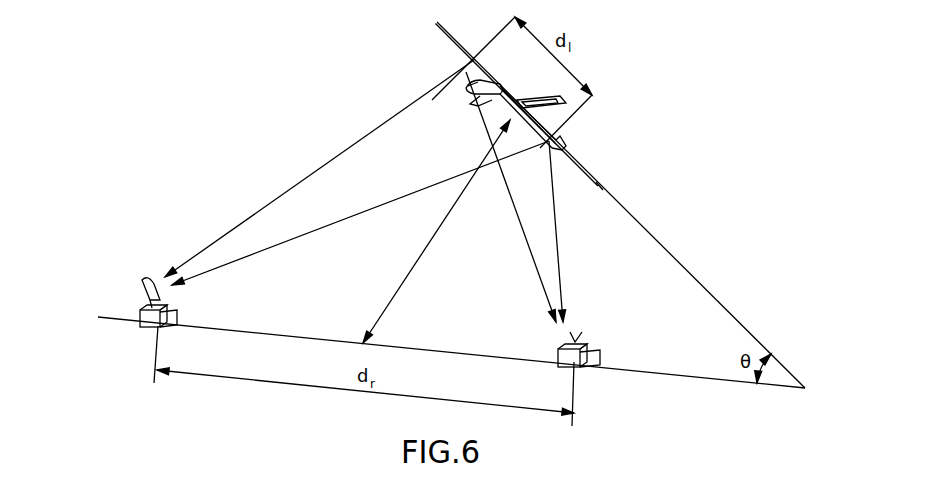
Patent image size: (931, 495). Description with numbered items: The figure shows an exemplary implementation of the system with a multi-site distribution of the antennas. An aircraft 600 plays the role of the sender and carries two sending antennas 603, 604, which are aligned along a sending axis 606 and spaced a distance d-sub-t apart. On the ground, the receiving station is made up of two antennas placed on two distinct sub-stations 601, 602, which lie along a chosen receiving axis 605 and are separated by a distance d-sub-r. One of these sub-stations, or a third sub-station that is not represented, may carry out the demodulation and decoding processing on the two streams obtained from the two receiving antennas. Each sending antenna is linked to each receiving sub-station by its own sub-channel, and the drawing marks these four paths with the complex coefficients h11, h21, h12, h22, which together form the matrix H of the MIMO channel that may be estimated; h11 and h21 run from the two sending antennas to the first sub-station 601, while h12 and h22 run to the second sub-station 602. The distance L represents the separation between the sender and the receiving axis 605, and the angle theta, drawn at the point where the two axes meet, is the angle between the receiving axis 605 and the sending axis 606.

The aircraft 600 is at (500, 90).
The sub-station 601 is at (148, 298).
The sub-station 602 is at (600, 365).
The sending antenna 603 is at (477, 62).
The sending antenna 604 is at (547, 143).
The receiving axis 605 is at (652, 372).
The sending axis 606 is at (678, 263).
The complex coefficient h11 is at (368, 138).
The complex coefficient h21 is at (377, 210).
The complex coefficient h12 is at (527, 242).
The complex coefficient h22 is at (557, 243).
The distance between the sender and the receiving axis L is at (436, 231).